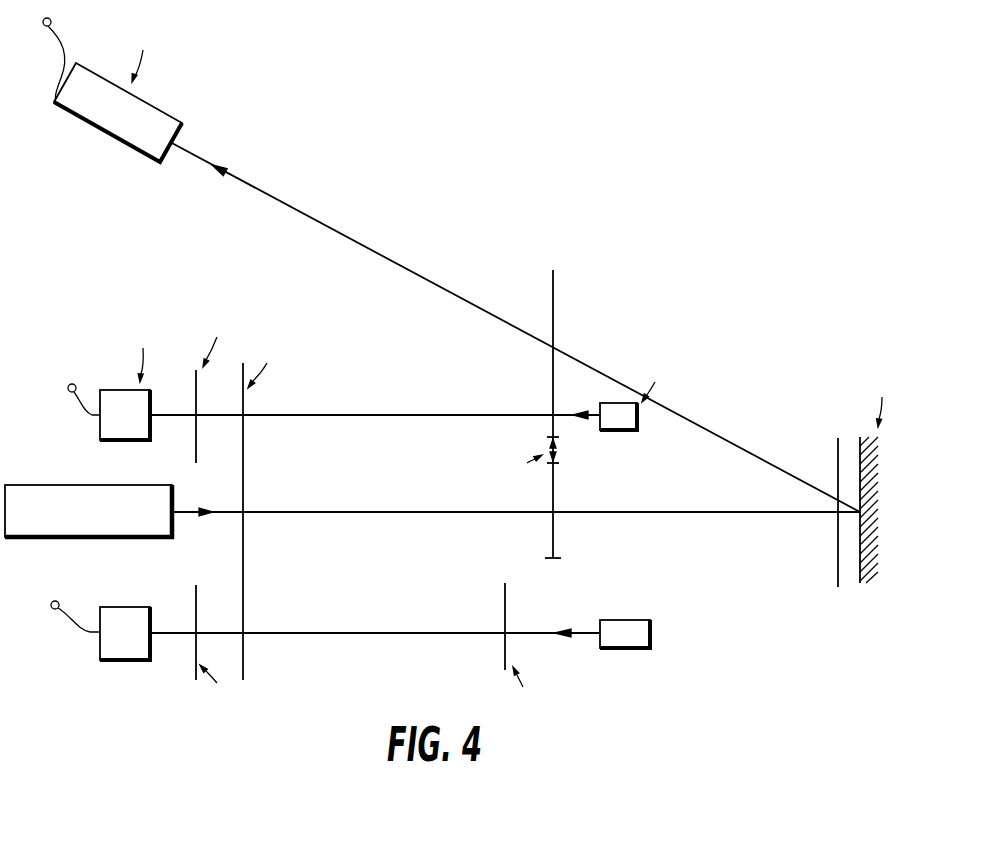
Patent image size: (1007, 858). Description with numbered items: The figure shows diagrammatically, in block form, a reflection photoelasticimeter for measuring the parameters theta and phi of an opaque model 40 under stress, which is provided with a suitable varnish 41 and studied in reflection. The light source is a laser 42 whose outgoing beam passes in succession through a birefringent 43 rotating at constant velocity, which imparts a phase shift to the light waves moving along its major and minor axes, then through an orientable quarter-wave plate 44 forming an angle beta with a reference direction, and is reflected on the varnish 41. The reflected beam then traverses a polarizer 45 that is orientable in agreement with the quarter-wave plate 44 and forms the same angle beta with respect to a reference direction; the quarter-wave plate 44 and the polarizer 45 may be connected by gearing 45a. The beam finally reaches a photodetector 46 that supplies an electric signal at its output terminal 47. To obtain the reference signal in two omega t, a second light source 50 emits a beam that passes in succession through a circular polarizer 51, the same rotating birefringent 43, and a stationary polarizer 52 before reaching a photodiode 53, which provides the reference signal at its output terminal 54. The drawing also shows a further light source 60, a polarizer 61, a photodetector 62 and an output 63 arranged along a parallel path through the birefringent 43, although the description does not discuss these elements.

The opaque model 40 is at (862, 580).
The varnish 41 is at (850, 448).
The laser 42 is at (98, 537).
The birefringent 43 is at (247, 555).
The quarter-wave plate 44 is at (554, 545).
The polarizer 45 is at (554, 311).
The gearing 45a is at (520, 455).
The photodetector 46 is at (166, 110).
The output terminal 47 is at (51, 20).
The light source 50 is at (633, 648).
The circular polarizer 51 is at (504, 665).
The stationary polarizer 52 is at (196, 665).
The photodiode 53 is at (100, 655).
The output terminal 54 is at (51, 603).
The light source 60 is at (638, 421).
The polarizer 61 is at (195, 380).
The photodetector 62 is at (117, 390).
The photodetector output 63 is at (70, 384).